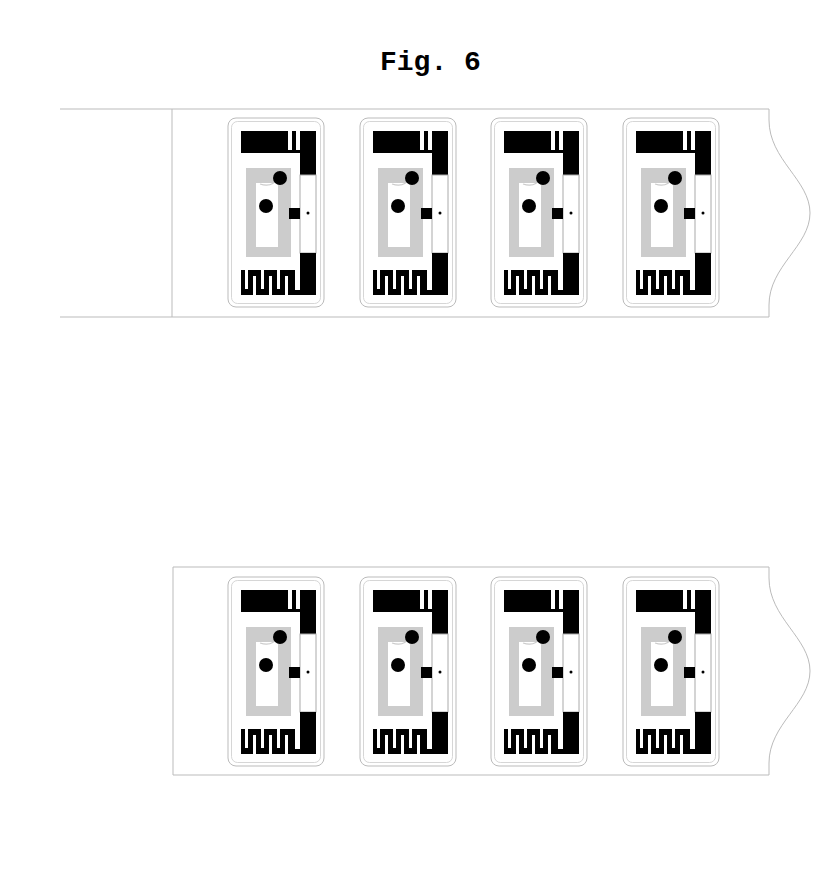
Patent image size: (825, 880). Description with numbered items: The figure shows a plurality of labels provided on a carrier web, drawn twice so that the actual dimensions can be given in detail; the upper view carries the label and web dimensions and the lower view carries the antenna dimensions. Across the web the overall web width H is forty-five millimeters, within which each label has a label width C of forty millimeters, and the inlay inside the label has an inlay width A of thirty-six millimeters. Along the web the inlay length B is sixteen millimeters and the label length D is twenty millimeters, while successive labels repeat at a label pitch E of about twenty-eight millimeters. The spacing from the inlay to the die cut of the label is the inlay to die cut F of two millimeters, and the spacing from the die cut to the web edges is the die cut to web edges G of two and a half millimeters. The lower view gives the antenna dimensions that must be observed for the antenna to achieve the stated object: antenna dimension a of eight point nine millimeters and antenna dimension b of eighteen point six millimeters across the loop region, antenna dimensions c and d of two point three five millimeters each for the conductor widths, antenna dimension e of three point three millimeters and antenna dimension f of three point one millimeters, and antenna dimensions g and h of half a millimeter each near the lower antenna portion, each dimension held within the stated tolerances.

The web width H is at (60, 109).
The label width C is at (233, 304).
The inlay width A is at (233, 295).
The inlay length B is at (240, 300).
The label length D is at (233, 300).
The label pitch E is at (363, 300).
The inlay to die cut F is at (455, 290).
The die cut to web edges G is at (601, 292).
The antenna dimension a is at (288, 610).
The antenna dimension b is at (348, 627).
The antenna dimension c is at (432, 680).
The antenna dimension d is at (420, 680).
The antenna dimension e is at (612, 627).
The antenna dimension f is at (348, 660).
The antenna dimension g is at (552, 753).
The antenna dimension h is at (685, 750).